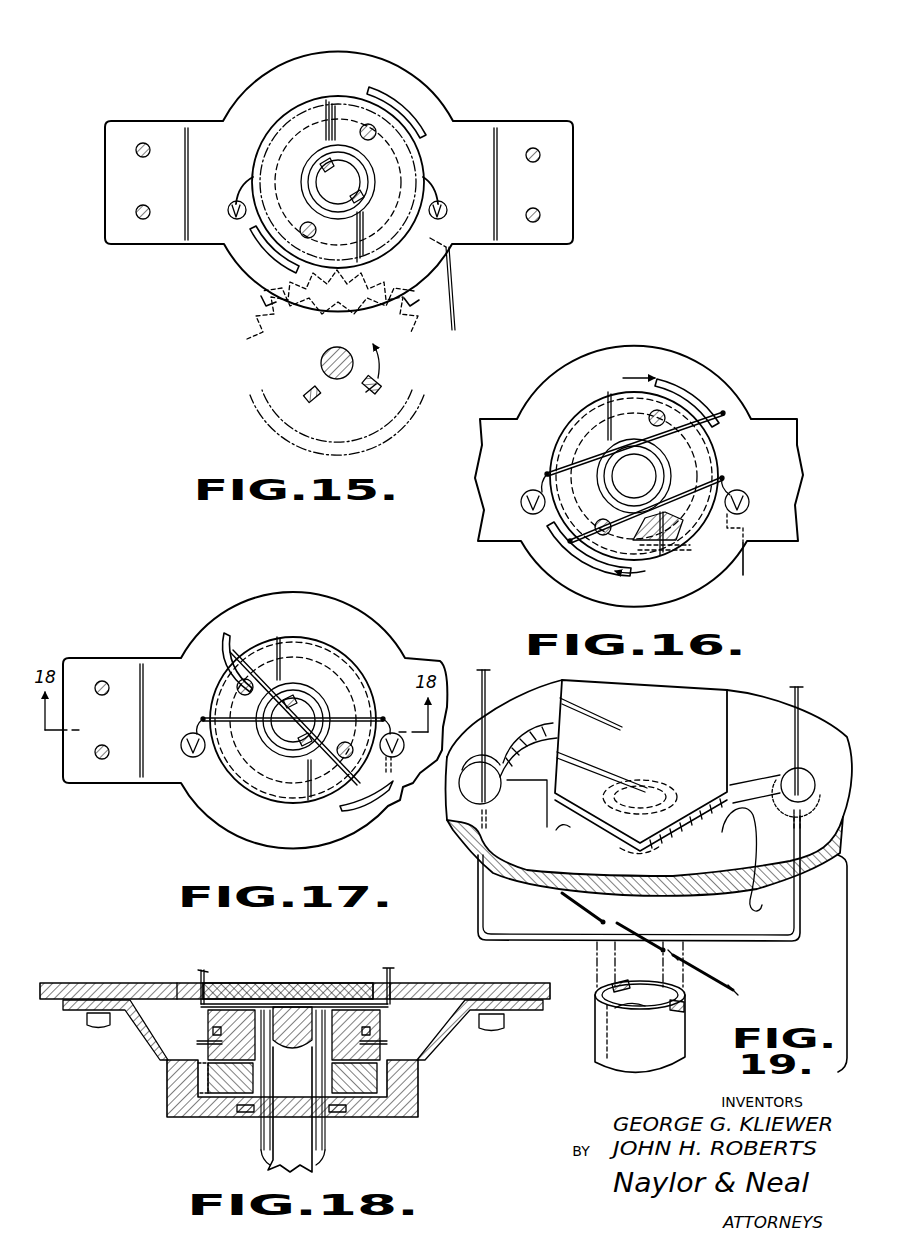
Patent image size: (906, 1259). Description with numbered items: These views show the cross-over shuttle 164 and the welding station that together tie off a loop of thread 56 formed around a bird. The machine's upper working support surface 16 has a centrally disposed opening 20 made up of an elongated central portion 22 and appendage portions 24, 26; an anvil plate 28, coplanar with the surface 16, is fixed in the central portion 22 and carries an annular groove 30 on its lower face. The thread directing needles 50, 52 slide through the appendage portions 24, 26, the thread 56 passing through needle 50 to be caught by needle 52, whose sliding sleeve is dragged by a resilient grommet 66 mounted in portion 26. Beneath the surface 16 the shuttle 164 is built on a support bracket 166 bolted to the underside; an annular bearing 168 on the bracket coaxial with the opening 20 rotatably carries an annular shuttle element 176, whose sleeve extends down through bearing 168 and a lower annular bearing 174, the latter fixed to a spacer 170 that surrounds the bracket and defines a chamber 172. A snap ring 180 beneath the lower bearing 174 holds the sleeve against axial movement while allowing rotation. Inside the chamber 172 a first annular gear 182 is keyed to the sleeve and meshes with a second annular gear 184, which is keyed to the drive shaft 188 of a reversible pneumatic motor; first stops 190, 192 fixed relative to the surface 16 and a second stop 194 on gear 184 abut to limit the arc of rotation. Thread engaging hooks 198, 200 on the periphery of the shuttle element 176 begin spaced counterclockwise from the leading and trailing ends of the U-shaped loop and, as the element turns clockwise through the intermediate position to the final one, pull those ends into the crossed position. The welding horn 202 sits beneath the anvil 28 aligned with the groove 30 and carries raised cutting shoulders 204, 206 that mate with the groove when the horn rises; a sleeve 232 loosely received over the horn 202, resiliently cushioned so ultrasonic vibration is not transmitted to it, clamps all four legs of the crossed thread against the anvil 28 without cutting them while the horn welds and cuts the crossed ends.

In FIG. 19, the upper working support surface 16 is at (738, 700).
In FIG. 18, the upper working support surface 16 is at (136, 979).
In FIG. 19, the centrally disposed opening 20 is at (750, 893).
In FIG. 19, the elongated central portion 22 is at (560, 828).
In FIG. 19, the appendage portion 24 is at (487, 760).
In FIG. 18, the appendage portion 24 is at (186, 979).
In FIG. 19, the appendage portion 26 is at (805, 766).
In FIG. 19, the anvil plate 28 is at (632, 720).
In FIG. 18, the anvil plate 28 is at (259, 980).
In FIG. 19, the annular groove 30 is at (641, 780).
In FIG. 18, the annular groove 30 is at (290, 1010).
In FIG. 15, the thread directing needle 50 is at (228, 204).
In FIG. 15, the thread directing needle 52 is at (450, 205).
In FIG. 15, the thread 56 is at (246, 182).
In FIG. 16, the thread 56 is at (560, 465).
In FIG. 17, the thread 56 is at (247, 650).
In FIG. 19, the thread 56 is at (549, 936).
In FIG. 18, the thread 56 is at (201, 968).
In FIG. 19, the resilient grommet 66 is at (815, 777).
In FIG. 18, the resilient grommet 66 is at (400, 981).
In FIG. 18, the cross-over shuttle 164 is at (445, 1073).
In FIG. 15, the support bracket 166 is at (203, 233).
In FIG. 16, the support bracket 166 is at (511, 533).
In FIG. 17, the support bracket 166 is at (163, 777).
In FIG. 18, the support bracket 166 is at (160, 1025).
In FIG. 16, the annular bearing 168 is at (670, 535).
In FIG. 18, the annular bearing 168 is at (365, 1040).
In FIG. 18, the spacer 170 is at (420, 1093).
In FIG. 18, the chamber 172 is at (220, 1100).
In FIG. 18, the lower annular bearing 174 is at (380, 1115).
In FIG. 15, the annular shuttle element 176 is at (307, 108).
In FIG. 16, the annular shuttle element 176 is at (598, 403).
In FIG. 17, the annular shuttle element 176 is at (330, 645).
In FIG. 18, the annular shuttle element 176 is at (208, 1016).
In FIG. 18, the snap ring 180 is at (246, 1114).
In FIG. 15, the first annular gear 182 is at (452, 278).
In FIG. 18, the first annular gear 182 is at (353, 1113).
In FIG. 15, the second annular gear 184 is at (262, 303).
In FIG. 15, the drive shaft 188 is at (326, 352).
In FIG. 15, the first stop 190 is at (368, 397).
In FIG. 15, the first stop 192 is at (307, 390).
In FIG. 15, the second stop 194 is at (381, 385).
In FIG. 15, the thread engaging hook 198 is at (395, 104).
In FIG. 16, the thread engaging hook 198 is at (578, 557).
In FIG. 17, the thread engaging hook 198 is at (223, 657).
In FIG. 15, the thread engaging hook 200 is at (277, 253).
In FIG. 16, the thread engaging hook 200 is at (694, 396).
In FIG. 17, the thread engaging hook 200 is at (376, 784).
In FIG. 15, the welding horn 202 is at (325, 188).
In FIG. 17, the welding horn 202 is at (293, 720).
In FIG. 19, the welding horn 202 is at (600, 1008).
In FIG. 18, the welding horn 202 is at (295, 1010).
In FIG. 15, the raised cutting shoulder 204 is at (354, 201).
In FIG. 17, the raised cutting shoulder 204 is at (302, 750).
In FIG. 19, the raised cutting shoulder 204 is at (687, 1014).
In FIG. 15, the raised cutting shoulder 206 is at (322, 167).
In FIG. 17, the raised cutting shoulder 206 is at (289, 695).
In FIG. 19, the raised cutting shoulder 206 is at (610, 980).
In FIG. 18, the raised cutting shoulder 206 is at (290, 1109).
In FIG. 15, the sleeve 232 is at (357, 172).
In FIG. 19, the sleeve 232 is at (690, 992).
In FIG. 18, the sleeve 232 is at (262, 1147).